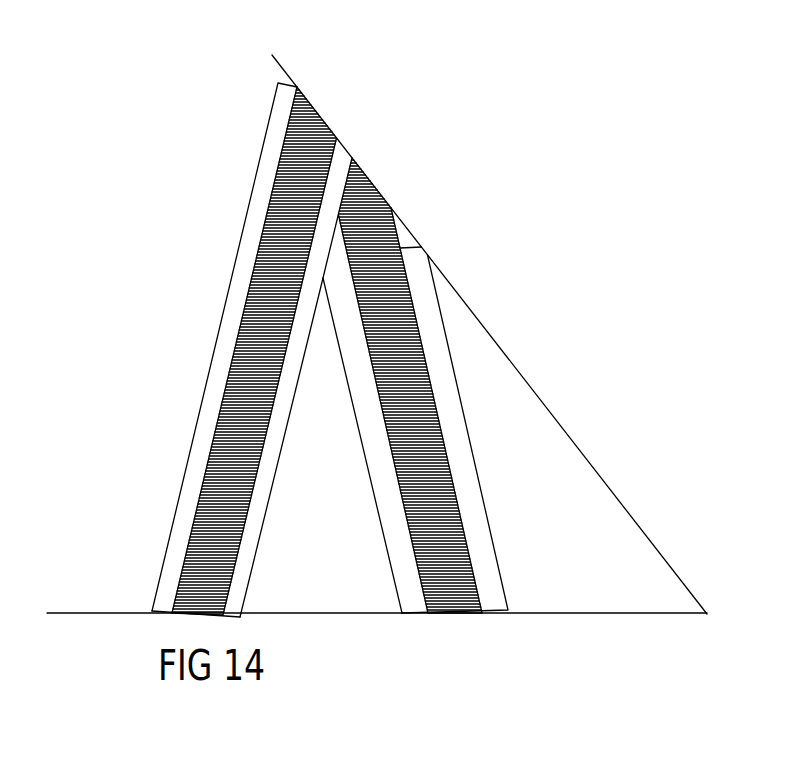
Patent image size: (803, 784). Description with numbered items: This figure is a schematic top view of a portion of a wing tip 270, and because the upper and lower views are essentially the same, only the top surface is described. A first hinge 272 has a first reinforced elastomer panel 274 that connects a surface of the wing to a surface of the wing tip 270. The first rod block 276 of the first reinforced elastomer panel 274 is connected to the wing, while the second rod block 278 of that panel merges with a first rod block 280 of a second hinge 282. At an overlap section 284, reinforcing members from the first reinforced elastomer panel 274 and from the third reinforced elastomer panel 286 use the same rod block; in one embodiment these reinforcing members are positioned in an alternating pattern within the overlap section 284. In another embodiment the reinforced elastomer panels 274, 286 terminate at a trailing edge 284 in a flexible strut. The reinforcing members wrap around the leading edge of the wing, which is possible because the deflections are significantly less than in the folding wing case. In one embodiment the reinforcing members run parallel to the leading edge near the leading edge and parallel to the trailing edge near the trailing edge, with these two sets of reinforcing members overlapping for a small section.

The wing tip 270 is at (473, 129).
The first hinge 272 is at (338, 105).
The first reinforced elastomer panel 274 is at (235, 353).
The first rod block 276 is at (208, 400).
The second rod block 278 is at (262, 512).
The first rod block of second hinge 280 is at (368, 410).
The second hinge 282 is at (412, 184).
The overlap section 284 is at (335, 185).
The third reinforced elastomer panel 286 is at (430, 443).